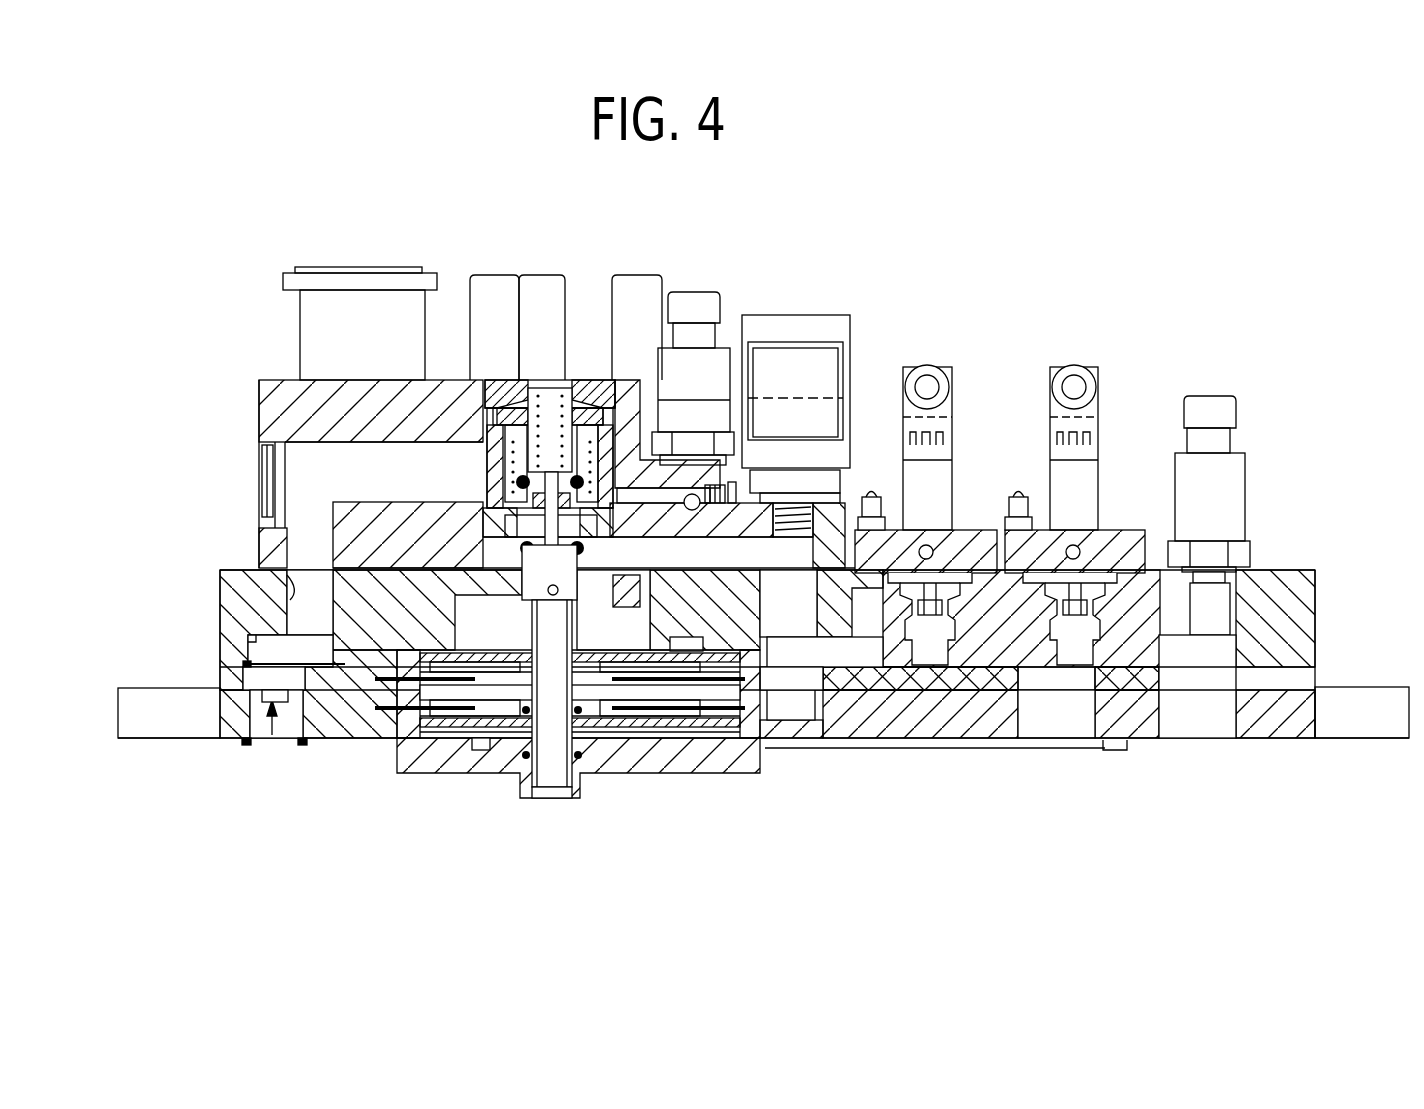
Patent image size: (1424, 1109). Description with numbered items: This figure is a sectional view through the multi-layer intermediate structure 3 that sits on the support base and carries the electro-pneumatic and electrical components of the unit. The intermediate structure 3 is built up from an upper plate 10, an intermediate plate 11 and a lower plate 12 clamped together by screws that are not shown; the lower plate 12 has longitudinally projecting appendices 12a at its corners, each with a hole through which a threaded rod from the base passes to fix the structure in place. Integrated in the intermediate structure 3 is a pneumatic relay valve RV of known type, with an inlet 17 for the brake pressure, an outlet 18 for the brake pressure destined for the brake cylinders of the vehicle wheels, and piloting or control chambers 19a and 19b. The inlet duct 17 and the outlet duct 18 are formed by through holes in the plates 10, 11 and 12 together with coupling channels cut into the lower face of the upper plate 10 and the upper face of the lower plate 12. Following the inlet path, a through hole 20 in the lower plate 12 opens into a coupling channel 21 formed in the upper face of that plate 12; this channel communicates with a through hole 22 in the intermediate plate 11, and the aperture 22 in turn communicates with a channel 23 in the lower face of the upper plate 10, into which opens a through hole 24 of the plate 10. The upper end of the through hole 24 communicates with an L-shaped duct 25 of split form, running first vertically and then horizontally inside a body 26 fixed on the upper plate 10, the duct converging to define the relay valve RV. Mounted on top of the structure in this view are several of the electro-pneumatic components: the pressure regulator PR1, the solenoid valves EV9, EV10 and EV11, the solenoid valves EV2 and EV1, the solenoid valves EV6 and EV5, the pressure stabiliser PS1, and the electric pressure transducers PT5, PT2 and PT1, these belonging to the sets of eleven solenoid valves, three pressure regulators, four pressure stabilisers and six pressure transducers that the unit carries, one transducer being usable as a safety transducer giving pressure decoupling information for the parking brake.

The multi-layer intermediate structure 3 is at (213, 515).
The pneumatic relay valve RV is at (460, 468).
The body 26 is at (285, 408).
The L-shape duct 25 is at (286, 515).
The through hole 24 is at (290, 598).
The upper plate 10 is at (220, 598).
The channel 23 is at (243, 628).
The longitudinally projecting appendices 12a is at (133, 697).
The intermediate plate 11 is at (218, 680).
The lower plate 12 is at (210, 718).
The through hole 22 is at (257, 682).
The inlet 17 is at (273, 737).
The through hole 20 is at (283, 738).
The coupling channel 21 is at (327, 740).
The piloting or control chamber 19a is at (488, 722).
The piloting or control chamber 19b is at (606, 702).
The outlet 18 is at (812, 648).
The pressure regulator PR1 is at (360, 297).
The solenoid valve EV9 is at (492, 298).
The solenoid valve EV10 is at (543, 298).
The solenoid valve EV11 is at (638, 300).
The electric pressure transducer PT5 is at (703, 336).
The pressure stabiliser PS1 is at (818, 322).
The solenoid valve EV2 is at (928, 467).
The solenoid valve EV1 is at (922, 367).
The solenoid valve EV6 is at (1076, 479).
The solenoid valve EV5 is at (1063, 370).
The electric pressure transducer PT2 is at (1238, 528).
The electric pressure transducer PT1 is at (1212, 412).